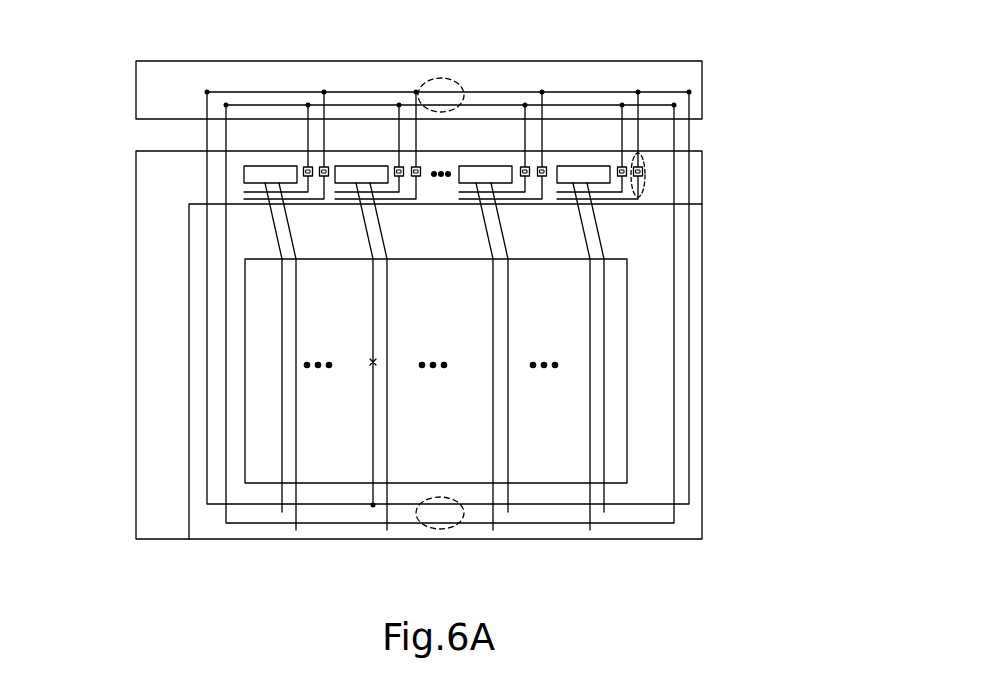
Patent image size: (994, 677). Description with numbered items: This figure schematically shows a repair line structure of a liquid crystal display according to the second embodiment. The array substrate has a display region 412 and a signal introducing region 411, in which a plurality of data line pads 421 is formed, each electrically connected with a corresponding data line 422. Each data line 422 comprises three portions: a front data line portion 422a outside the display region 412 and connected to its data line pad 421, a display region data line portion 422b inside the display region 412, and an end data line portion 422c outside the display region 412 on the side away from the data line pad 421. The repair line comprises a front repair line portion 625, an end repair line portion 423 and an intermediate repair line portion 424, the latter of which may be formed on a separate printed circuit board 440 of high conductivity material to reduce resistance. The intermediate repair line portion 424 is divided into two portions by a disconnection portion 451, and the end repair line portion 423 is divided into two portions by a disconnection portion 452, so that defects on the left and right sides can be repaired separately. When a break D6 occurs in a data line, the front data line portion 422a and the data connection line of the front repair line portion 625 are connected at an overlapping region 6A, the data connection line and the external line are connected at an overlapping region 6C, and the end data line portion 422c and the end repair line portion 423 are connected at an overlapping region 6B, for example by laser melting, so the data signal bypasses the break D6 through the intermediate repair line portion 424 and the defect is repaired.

The signal introducing region 411 is at (167, 186).
The display region 412 is at (270, 300).
The data line pad 421 is at (360, 176).
The data line 422 is at (544, 356).
The front data line portion 422a is at (603, 242).
The display region data line portion 422b is at (606, 348).
The end data line portion 422c is at (526, 466).
The end repair line portion 423 is at (690, 220).
The intermediate repair line portion 424 is at (270, 105).
The circuit board 440 is at (692, 77).
The disconnection portion 451 is at (447, 79).
The disconnection portion 452 is at (433, 542).
The front repair line portion 625 is at (648, 176).
The overlapping region 6A is at (356, 190).
The overlapping region 6B is at (373, 505).
The overlapping region 6C is at (405, 177).
The break D6 is at (431, 366).